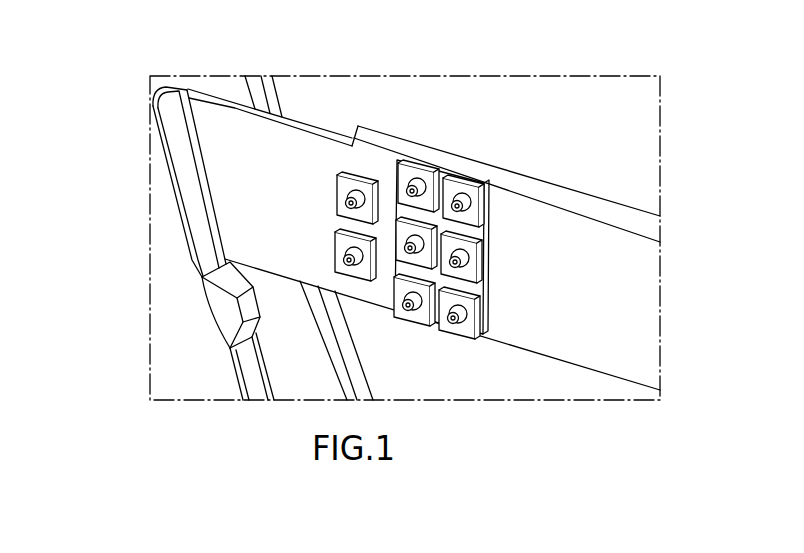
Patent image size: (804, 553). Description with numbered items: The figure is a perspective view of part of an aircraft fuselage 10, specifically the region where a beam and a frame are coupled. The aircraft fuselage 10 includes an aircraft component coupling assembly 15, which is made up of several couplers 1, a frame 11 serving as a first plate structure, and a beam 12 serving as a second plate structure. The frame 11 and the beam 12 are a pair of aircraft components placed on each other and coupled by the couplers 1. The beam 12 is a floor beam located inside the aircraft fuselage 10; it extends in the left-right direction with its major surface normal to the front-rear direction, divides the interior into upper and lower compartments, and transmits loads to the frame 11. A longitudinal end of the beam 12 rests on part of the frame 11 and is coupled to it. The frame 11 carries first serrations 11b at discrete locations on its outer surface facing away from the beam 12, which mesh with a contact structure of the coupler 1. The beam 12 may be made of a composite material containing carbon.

The coupler 1 is at (350, 176).
The aircraft fuselage 10 is at (165, 347).
The frame 11 is at (232, 122).
The first serration 11b is at (367, 168).
The beam 12 is at (547, 198).
The aircraft component coupling assembly 15 is at (478, 116).